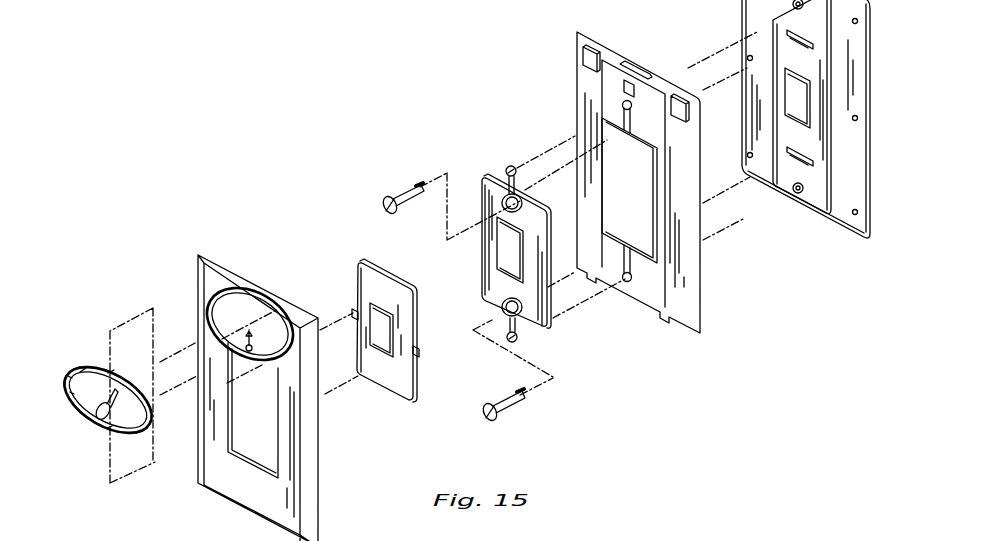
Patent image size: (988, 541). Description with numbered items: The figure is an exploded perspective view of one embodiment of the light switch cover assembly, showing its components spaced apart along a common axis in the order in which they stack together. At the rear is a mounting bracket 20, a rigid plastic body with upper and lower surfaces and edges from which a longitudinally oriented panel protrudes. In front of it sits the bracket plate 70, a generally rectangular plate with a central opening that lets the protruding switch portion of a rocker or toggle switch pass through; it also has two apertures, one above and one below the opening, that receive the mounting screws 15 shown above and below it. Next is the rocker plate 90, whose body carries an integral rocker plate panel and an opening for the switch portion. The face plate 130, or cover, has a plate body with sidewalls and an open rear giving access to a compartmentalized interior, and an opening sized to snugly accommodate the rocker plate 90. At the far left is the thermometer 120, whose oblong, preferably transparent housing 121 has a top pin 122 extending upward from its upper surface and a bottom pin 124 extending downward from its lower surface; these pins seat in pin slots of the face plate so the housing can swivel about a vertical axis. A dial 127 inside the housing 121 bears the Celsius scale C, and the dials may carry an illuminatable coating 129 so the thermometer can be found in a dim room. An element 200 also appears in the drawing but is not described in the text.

The mounting screws 15 is at (412, 194).
The mounting bracket 20 is at (575, 67).
The bracket plate 70 is at (478, 187).
The rocker plate 90 is at (352, 272).
The thermometer 120 is at (114, 406).
The housing 121 is at (80, 372).
The top pin 122 is at (108, 373).
The bottom pin 124 is at (107, 428).
The dial 127 is at (70, 392).
The illuminatable coating 129 is at (93, 395).
The face plate 130 is at (192, 273).
The wall box device 200 is at (760, 270).
The Celsius scale C is at (68, 376).